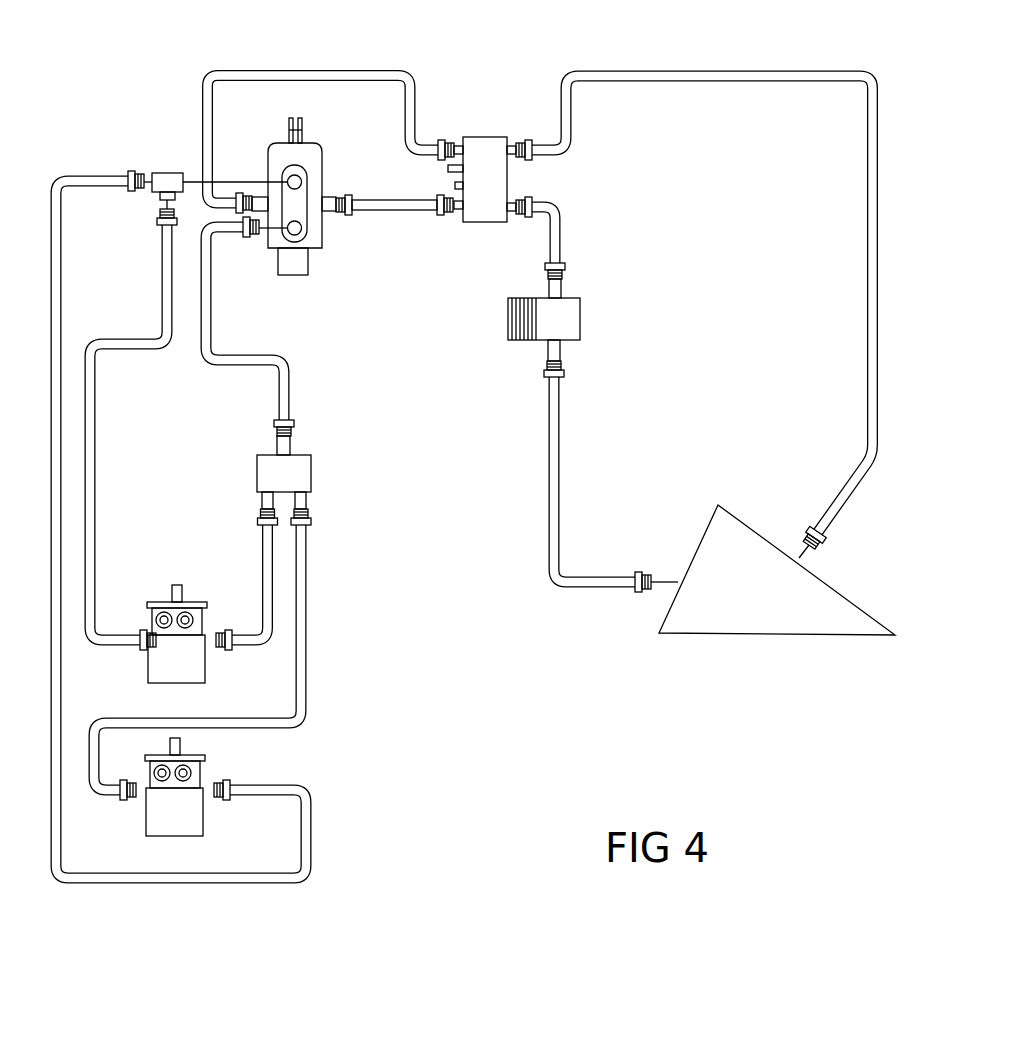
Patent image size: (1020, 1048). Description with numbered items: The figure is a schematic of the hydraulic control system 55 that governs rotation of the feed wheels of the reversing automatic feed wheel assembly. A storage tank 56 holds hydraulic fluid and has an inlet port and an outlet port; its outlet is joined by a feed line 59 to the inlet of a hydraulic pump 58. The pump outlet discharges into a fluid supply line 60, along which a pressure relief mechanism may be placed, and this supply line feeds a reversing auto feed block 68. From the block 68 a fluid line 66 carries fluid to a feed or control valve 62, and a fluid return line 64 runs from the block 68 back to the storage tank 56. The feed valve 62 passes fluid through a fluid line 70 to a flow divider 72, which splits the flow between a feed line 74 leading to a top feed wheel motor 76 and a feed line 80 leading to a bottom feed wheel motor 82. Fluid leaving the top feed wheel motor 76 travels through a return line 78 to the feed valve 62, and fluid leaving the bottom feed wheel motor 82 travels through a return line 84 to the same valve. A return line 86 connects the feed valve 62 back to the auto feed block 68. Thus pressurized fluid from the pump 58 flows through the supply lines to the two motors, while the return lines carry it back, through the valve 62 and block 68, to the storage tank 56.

The control system 55 is at (475, 469).
The storage tank 56 is at (735, 660).
The hydraulic pump 58 is at (494, 334).
The feed line 59 is at (558, 472).
The fluid supply line 60 is at (565, 222).
The feed valve 62 is at (329, 290).
The fluid return line 64 is at (866, 316).
The fluid line 66 is at (390, 209).
The reversing auto feed block 68 is at (498, 137).
The fluid line 70 is at (265, 358).
The flow divider 72 is at (336, 490).
The feed line 74 is at (262, 566).
The top feed wheel motor 76 is at (166, 575).
The return line 78 is at (94, 465).
The feed line 80 is at (310, 650).
The bottom feed wheel motor 82 is at (219, 835).
The return line 84 is at (133, 885).
The return line 86 is at (345, 70).